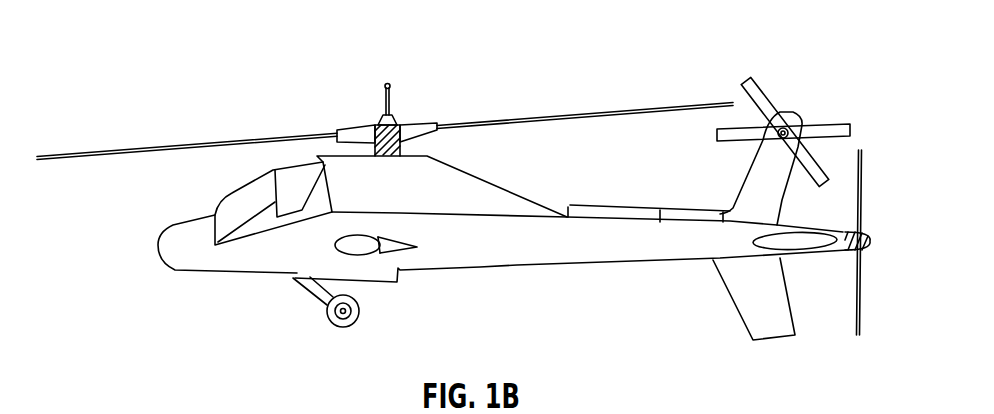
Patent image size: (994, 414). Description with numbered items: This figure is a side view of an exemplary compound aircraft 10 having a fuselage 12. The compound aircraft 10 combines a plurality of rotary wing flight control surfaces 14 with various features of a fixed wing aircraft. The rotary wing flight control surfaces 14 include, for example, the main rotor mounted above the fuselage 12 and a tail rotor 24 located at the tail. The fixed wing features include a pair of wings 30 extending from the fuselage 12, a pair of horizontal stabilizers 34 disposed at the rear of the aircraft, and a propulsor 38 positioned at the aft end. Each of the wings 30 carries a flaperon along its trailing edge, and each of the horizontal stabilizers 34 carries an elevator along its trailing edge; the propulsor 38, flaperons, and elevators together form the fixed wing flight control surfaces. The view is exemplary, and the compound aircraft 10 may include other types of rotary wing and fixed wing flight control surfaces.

The compound aircraft 10 is at (185, 51).
The fuselage 12 is at (277, 240).
The rotary wing flight control surfaces 14 is at (280, 129).
The tail rotor 24 is at (755, 83).
The wing 30 is at (363, 254).
The horizontal stabilizer 34 is at (792, 241).
The propulsor 38 is at (862, 275).